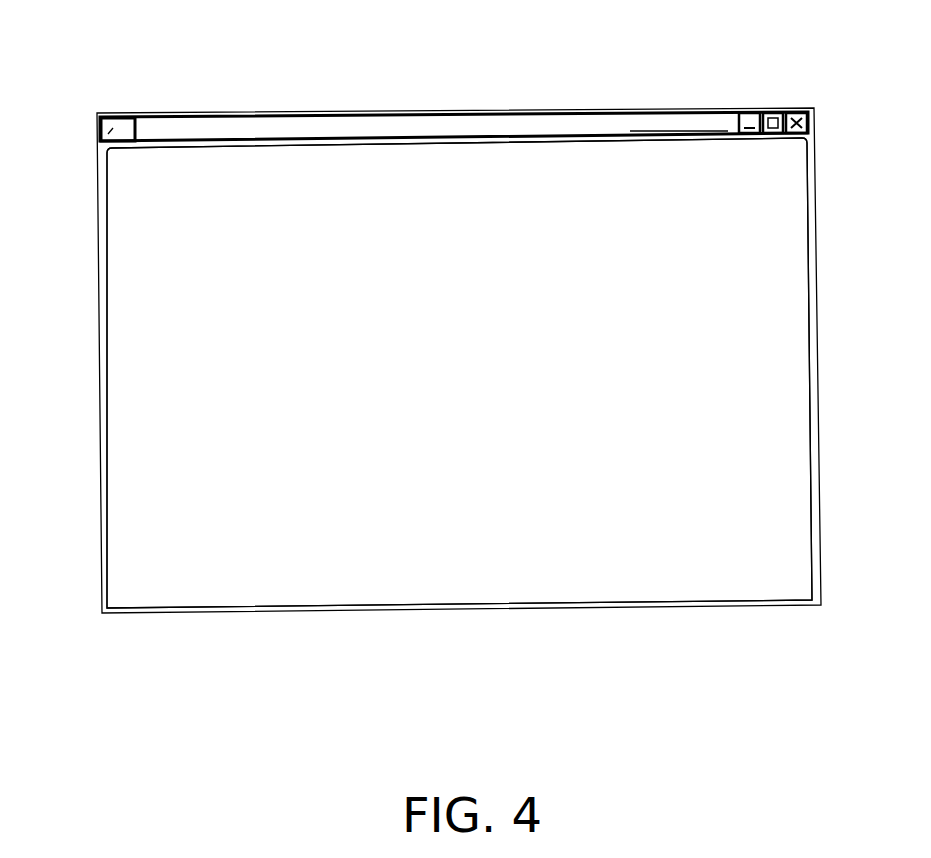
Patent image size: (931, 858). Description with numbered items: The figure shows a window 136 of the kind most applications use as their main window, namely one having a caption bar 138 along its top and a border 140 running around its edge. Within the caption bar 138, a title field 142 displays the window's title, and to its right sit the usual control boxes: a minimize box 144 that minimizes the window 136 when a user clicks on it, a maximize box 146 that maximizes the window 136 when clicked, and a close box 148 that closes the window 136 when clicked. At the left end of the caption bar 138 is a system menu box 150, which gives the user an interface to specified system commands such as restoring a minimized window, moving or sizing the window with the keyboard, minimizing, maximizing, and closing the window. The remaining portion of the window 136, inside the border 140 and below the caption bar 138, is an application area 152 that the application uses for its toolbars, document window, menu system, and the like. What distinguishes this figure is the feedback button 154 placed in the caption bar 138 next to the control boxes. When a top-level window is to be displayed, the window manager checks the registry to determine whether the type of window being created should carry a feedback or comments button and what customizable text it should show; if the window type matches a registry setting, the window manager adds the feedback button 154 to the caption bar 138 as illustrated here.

The window 136 is at (78, 398).
The caption bar 138 is at (447, 113).
The border 140 is at (102, 585).
The title field 142 is at (151, 112).
The minimize box 144 is at (752, 111).
The maximize box 146 is at (772, 111).
The close box 148 is at (805, 111).
The system menu box 150 is at (100, 137).
The application area 152 is at (410, 388).
The feedback button 154 is at (702, 125).